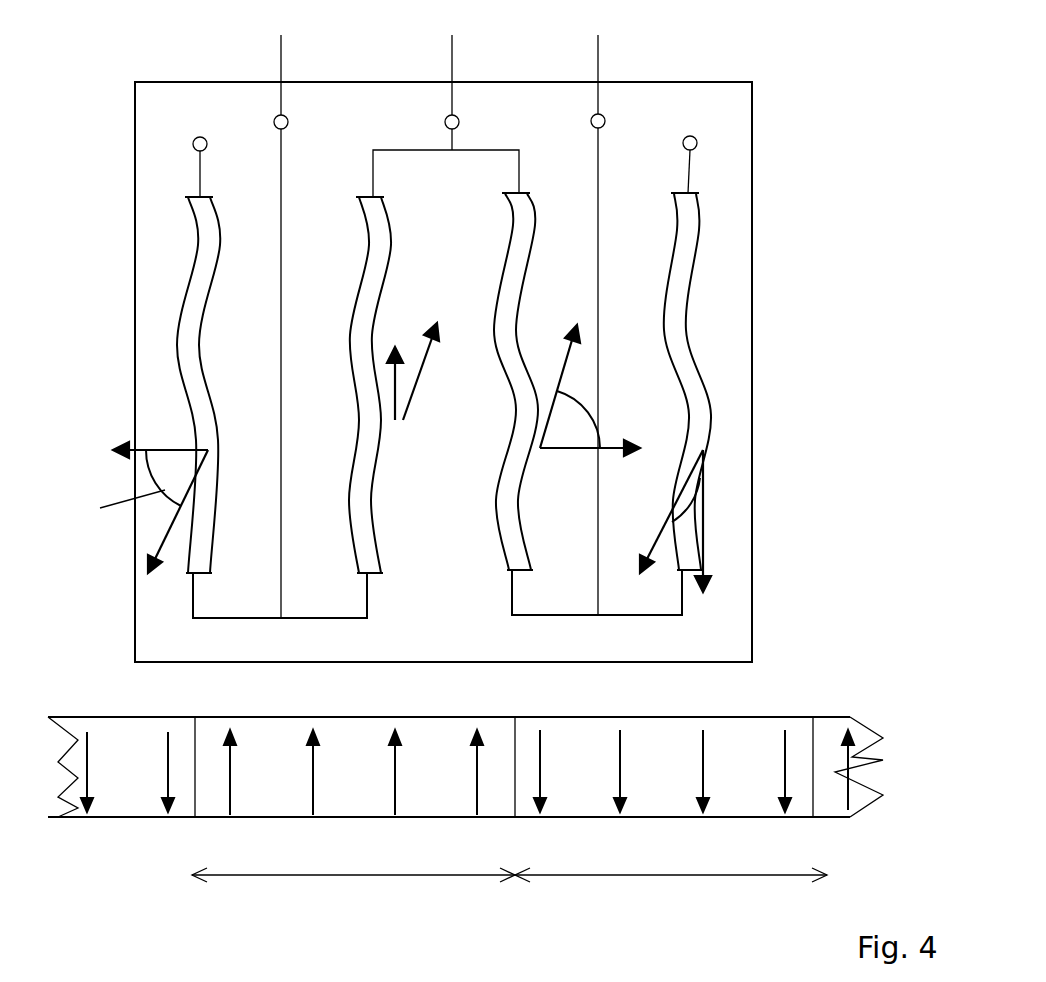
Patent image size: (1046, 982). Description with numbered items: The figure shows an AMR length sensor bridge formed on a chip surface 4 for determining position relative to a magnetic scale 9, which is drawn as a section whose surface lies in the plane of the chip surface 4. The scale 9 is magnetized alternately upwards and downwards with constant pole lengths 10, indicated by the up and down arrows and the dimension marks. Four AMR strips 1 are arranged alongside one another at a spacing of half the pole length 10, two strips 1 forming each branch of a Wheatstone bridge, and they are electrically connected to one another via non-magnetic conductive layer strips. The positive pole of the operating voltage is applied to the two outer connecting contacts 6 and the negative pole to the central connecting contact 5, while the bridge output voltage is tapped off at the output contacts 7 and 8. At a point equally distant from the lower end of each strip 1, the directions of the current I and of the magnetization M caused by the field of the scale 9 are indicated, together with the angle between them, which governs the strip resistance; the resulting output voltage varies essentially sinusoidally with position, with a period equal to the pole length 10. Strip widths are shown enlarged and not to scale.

The AMR strip 1 is at (350, 325).
The chip surface 4 is at (745, 343).
The connecting contact 5 is at (446, 102).
The connecting contacts 6 is at (197, 137).
The output contact 7 is at (283, 312).
The output contact 8 is at (588, 311).
The scale 9 is at (745, 730).
The pole length 10 is at (509, 860).